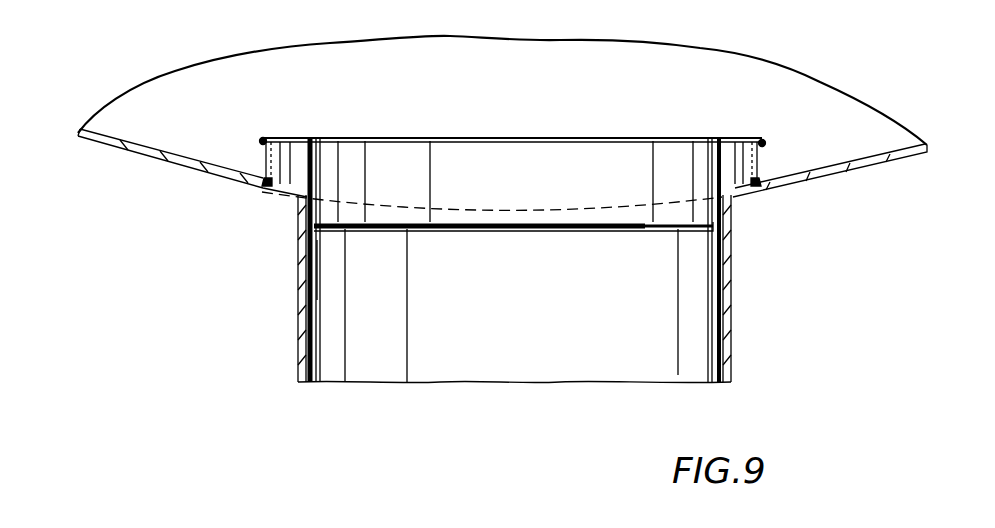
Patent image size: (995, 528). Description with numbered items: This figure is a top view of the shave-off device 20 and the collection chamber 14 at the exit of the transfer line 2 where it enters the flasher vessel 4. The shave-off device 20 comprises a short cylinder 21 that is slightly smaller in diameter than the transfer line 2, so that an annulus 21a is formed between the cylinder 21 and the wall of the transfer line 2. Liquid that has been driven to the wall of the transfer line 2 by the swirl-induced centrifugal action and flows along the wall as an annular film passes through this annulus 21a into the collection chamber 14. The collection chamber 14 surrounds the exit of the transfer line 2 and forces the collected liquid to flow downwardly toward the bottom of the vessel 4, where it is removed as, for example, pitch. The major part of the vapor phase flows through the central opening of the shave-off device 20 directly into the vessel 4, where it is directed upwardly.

The flasher vessel 4 is at (535, 85).
The transfer line 2 is at (493, 328).
The short cylinder 21 is at (708, 168).
The annulus 21a is at (338, 265).
The shave-off device 20 is at (740, 134).
The collection chamber 14 is at (298, 156).